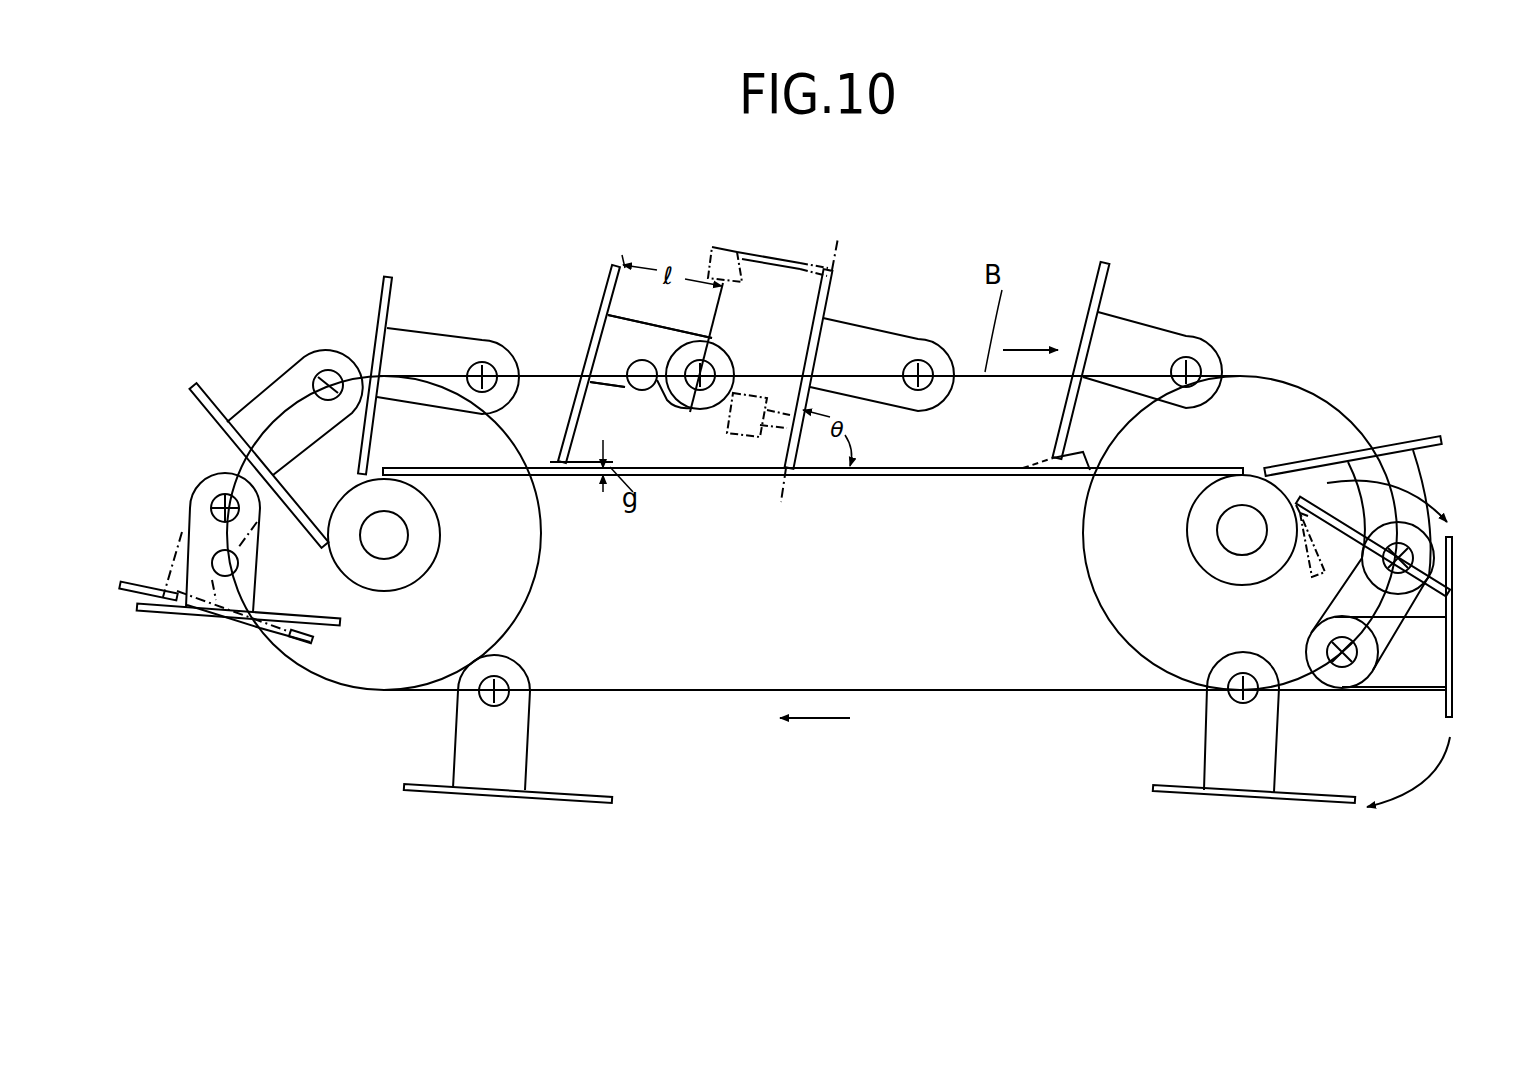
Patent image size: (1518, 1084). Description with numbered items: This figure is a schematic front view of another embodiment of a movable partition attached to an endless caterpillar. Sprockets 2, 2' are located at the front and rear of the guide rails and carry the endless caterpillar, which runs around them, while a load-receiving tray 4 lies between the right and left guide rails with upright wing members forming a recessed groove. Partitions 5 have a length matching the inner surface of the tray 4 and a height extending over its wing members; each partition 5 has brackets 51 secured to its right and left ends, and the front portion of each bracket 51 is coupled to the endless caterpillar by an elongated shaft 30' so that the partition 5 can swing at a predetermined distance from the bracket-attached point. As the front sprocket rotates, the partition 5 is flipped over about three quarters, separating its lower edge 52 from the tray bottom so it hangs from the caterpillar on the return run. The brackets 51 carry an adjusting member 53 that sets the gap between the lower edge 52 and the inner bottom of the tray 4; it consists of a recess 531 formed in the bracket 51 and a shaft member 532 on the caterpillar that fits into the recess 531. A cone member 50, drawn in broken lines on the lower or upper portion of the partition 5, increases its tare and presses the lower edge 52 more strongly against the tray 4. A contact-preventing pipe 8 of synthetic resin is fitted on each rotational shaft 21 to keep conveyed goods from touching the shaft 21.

The sprocket 2 is at (836, 532).
The sprocket 2' is at (255, 465).
The load-receiving tray 4 is at (945, 473).
The partition 5 is at (610, 288).
The contact-preventing pipe 8 is at (393, 580).
The rotational shaft 21 is at (392, 540).
The shaft 30' is at (765, 483).
The cone member 50 is at (723, 247).
The bracket 51 is at (705, 352).
The lower edge 52 is at (556, 470).
The adjusting member 53 is at (553, 292).
The recess 531 is at (640, 360).
The shaft member 532 is at (622, 370).